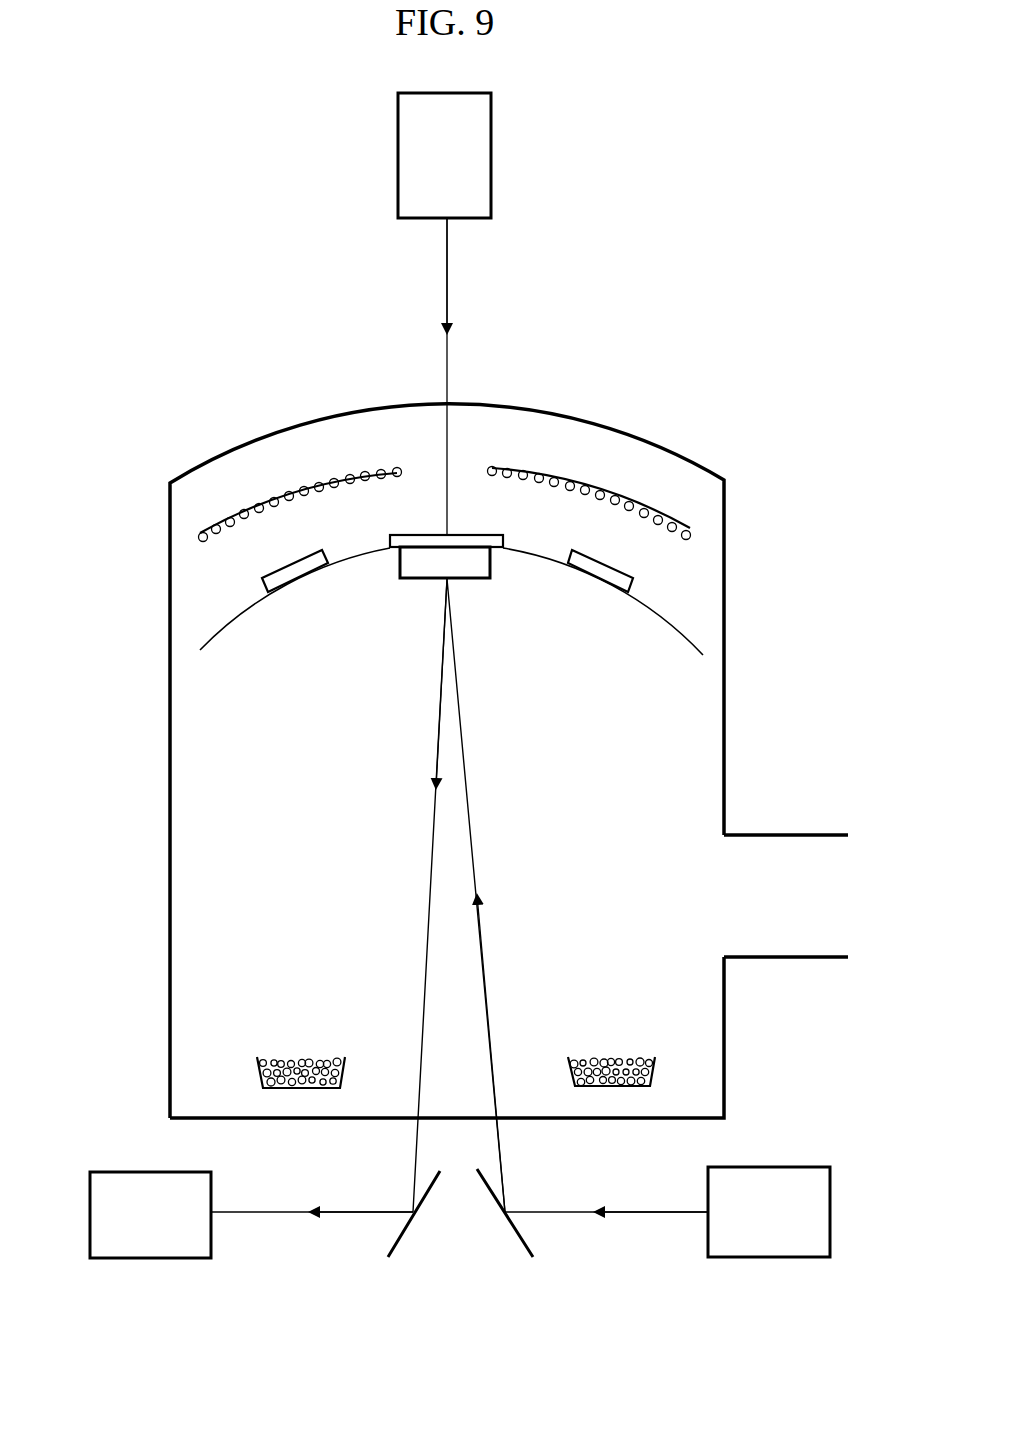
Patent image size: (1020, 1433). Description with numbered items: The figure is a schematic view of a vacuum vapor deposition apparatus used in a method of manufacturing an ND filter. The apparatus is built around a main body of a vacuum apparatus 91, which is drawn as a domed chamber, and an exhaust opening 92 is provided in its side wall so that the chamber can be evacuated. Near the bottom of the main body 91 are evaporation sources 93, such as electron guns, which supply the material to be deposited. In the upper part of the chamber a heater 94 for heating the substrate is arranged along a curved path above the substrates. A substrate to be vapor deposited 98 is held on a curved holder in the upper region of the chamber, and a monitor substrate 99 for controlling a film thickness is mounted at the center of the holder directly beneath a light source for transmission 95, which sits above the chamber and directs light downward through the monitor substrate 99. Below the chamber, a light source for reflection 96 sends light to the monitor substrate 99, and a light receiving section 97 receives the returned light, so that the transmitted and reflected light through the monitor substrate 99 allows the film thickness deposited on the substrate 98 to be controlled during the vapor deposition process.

The main body of vacuum apparatus 91 is at (168, 590).
The exhaust opening 92 is at (805, 881).
The evaporation source 93 is at (268, 1048).
The heater 94 is at (620, 497).
The light source for transmission 95 is at (491, 138).
The light source for reflection 96 is at (815, 1167).
The light receiving section 97 is at (120, 1172).
The substrate to be vapor deposited 98 is at (628, 580).
The monitor substrate 99 is at (472, 530).